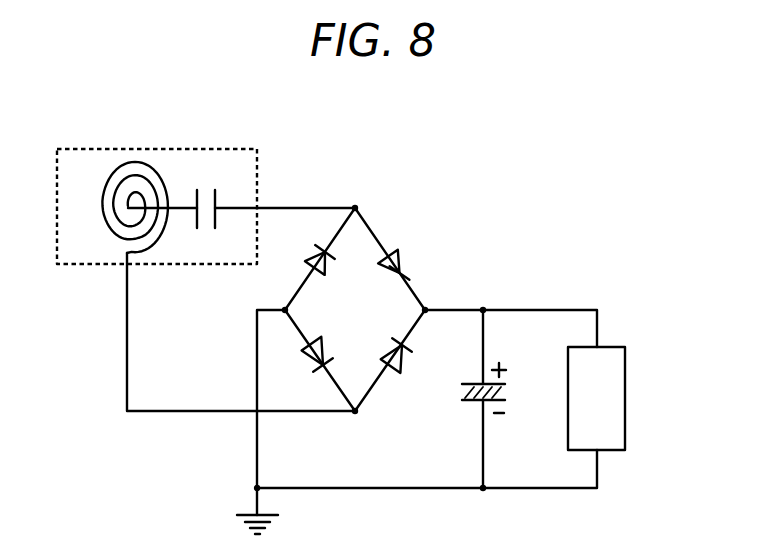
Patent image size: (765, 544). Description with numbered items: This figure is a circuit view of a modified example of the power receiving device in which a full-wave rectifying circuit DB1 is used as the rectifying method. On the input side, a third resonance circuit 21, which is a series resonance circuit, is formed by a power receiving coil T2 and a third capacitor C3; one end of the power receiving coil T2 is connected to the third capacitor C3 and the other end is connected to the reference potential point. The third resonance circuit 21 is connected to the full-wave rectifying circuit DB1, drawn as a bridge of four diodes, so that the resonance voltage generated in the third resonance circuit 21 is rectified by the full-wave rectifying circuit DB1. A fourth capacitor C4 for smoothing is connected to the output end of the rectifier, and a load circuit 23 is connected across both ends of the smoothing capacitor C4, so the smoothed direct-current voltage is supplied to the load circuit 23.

The power receiving coil T2 is at (131, 160).
The third resonance circuit 21 is at (209, 149).
The third capacitor C3 is at (205, 233).
The full-wave rectifying circuit DB1 is at (353, 310).
The fourth capacitor C4 is at (475, 405).
The load circuit 23 is at (625, 398).